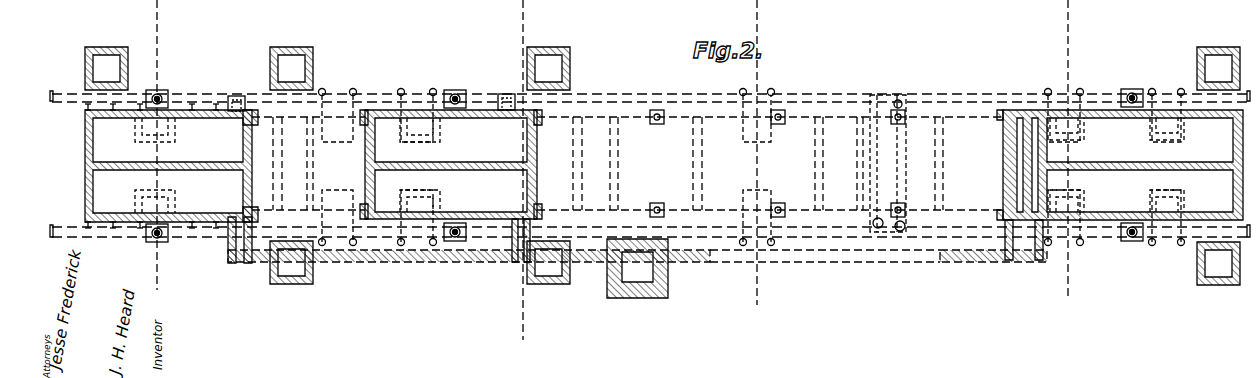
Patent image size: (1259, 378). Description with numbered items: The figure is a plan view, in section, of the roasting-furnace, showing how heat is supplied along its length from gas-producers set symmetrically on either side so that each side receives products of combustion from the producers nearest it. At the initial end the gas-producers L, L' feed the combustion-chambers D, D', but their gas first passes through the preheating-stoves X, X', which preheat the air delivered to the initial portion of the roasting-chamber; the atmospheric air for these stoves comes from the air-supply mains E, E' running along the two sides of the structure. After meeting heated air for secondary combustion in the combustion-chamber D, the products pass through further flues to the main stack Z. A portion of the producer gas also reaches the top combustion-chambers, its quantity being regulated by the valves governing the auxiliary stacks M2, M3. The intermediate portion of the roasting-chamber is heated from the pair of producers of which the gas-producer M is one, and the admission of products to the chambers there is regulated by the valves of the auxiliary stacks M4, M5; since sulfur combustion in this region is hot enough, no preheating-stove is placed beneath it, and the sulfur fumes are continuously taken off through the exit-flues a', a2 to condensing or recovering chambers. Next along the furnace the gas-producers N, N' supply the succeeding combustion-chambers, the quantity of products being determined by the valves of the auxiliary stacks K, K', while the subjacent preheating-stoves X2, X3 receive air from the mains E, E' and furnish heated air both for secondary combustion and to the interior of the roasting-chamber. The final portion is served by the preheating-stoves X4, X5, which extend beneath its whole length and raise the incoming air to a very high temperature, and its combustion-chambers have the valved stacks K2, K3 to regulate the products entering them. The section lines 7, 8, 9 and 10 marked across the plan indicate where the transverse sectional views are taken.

The section line 7 is at (1073, 161).
The section line 8 is at (761, 163).
The section line 9 is at (514, 176).
The section line 10 is at (167, 147).
The air-supply main E is at (646, 160).
The air-supply main E' is at (646, 153).
The gas-producer N is at (291, 275).
The gas-producer N' is at (291, 54).
The auxiliary stack K is at (496, 259).
The auxiliary stack K' is at (503, 86).
The stack K2 is at (228, 235).
The stack K3 is at (237, 95).
The sulfur-fume exit-flue a' is at (752, 149).
The sulfur-fume exit-flue a2 is at (352, 262).
The gas-producer M is at (545, 58).
The auxiliary stack M2 is at (905, 104).
The auxiliary stack M3 is at (905, 232).
The auxiliary stack M4 is at (882, 100).
The auxiliary stack M5 is at (878, 232).
The preheating-stove X is at (1120, 165).
The preheating-stove X' is at (1200, 142).
The preheating-stove X2 is at (485, 194).
The preheating-stove X3 is at (485, 143).
The preheating-stove X4 is at (215, 194).
The preheating-stove X5 is at (215, 143).
The combustion-chamber D is at (1103, 190).
The combustion-chamber D' is at (1105, 142).
The gas-producer L is at (1218, 263).
The gas-producer L' is at (1218, 54).
The main stack Z is at (641, 283).